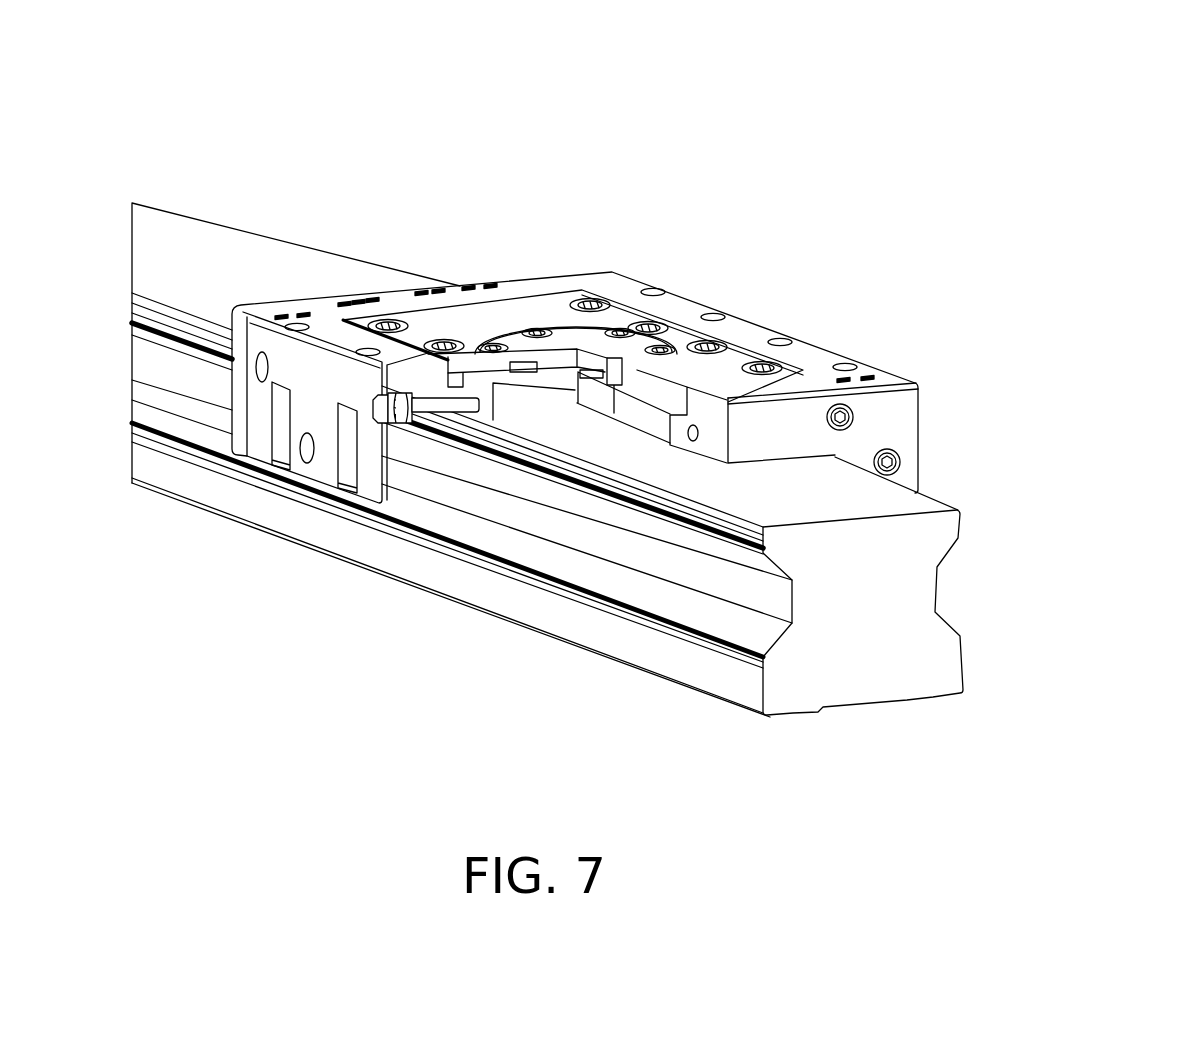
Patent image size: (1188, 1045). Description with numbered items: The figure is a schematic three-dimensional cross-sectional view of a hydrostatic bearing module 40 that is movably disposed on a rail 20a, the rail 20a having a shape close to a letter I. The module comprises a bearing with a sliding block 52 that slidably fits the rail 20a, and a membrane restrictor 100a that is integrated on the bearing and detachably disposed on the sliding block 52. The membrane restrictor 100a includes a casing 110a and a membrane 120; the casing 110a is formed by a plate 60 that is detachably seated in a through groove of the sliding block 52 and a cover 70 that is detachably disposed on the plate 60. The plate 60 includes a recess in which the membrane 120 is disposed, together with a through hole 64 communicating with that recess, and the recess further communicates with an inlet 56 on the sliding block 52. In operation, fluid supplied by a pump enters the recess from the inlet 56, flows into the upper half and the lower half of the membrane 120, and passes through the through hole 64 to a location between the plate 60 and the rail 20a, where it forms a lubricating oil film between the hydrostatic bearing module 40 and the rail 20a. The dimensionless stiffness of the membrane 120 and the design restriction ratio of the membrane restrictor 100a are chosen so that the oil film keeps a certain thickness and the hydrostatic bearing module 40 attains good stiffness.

The rail 20a is at (808, 690).
The hydrostatic bearing module 40 is at (718, 220).
The sliding block 52 is at (900, 427).
The inlet 56 is at (385, 406).
The plate 60 is at (725, 367).
The through hole 64 is at (575, 390).
The cover 70 is at (557, 335).
The membrane restrictor 100a is at (1058, 110).
The casing 110a is at (1140, 83).
The membrane 120 is at (437, 632).